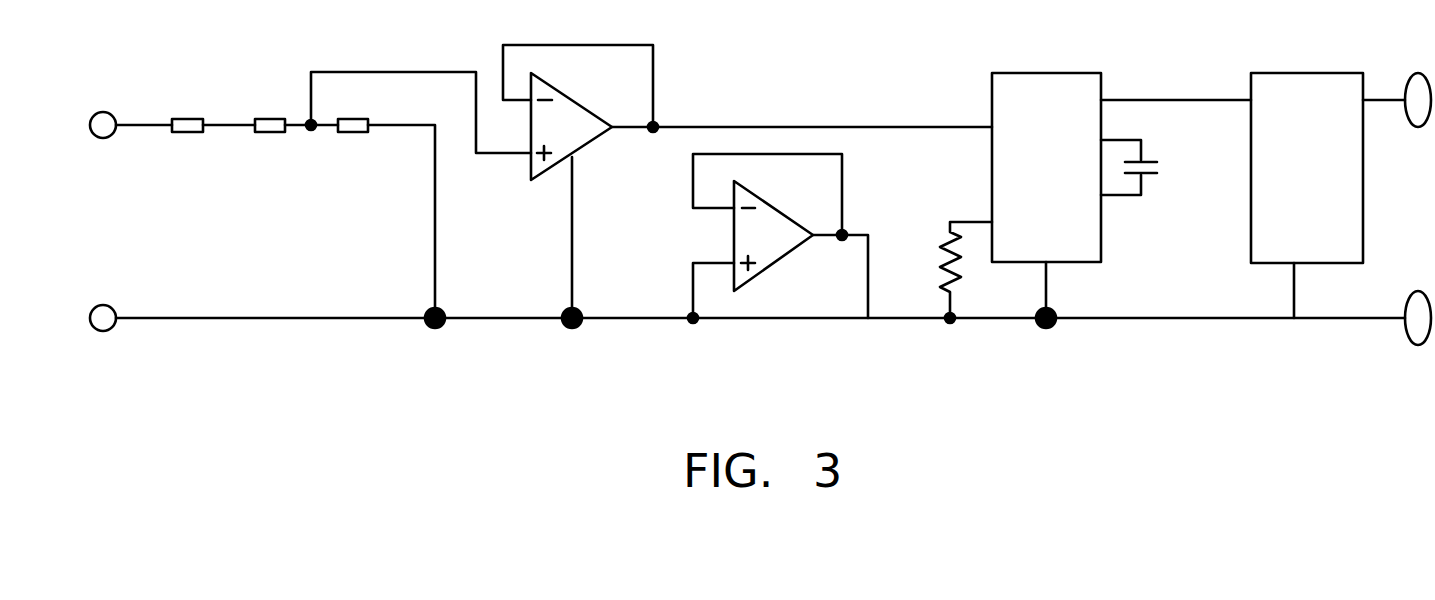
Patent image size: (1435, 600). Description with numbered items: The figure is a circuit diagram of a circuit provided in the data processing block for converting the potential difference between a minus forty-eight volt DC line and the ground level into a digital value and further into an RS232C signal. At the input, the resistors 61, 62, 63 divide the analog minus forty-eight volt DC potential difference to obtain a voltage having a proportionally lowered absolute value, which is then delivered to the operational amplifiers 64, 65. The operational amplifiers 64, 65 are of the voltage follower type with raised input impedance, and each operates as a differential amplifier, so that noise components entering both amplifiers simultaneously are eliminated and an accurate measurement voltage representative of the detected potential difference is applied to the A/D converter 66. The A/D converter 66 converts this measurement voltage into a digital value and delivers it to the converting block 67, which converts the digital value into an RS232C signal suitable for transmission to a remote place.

The resistor 61 is at (187, 132).
The resistor 62 is at (270, 132).
The resistor 63 is at (353, 132).
The operational amplifier 64 is at (560, 158).
The operational amplifier 65 is at (768, 263).
The A/D converter 66 is at (1015, 73).
The converting block 67 is at (1277, 73).